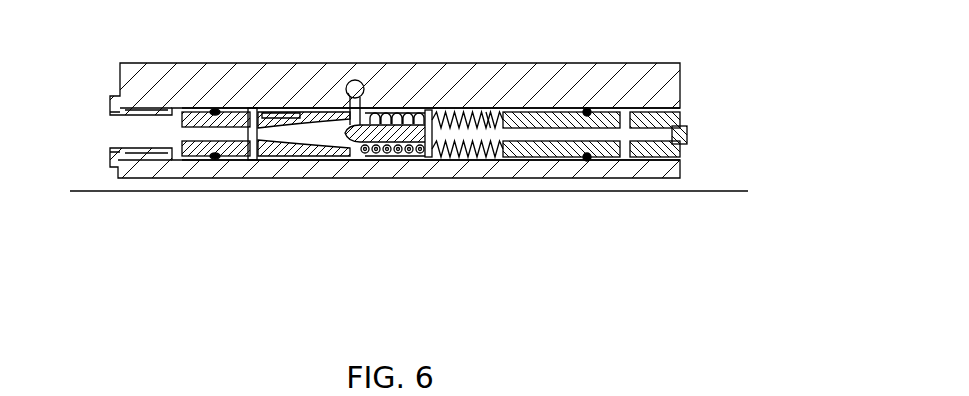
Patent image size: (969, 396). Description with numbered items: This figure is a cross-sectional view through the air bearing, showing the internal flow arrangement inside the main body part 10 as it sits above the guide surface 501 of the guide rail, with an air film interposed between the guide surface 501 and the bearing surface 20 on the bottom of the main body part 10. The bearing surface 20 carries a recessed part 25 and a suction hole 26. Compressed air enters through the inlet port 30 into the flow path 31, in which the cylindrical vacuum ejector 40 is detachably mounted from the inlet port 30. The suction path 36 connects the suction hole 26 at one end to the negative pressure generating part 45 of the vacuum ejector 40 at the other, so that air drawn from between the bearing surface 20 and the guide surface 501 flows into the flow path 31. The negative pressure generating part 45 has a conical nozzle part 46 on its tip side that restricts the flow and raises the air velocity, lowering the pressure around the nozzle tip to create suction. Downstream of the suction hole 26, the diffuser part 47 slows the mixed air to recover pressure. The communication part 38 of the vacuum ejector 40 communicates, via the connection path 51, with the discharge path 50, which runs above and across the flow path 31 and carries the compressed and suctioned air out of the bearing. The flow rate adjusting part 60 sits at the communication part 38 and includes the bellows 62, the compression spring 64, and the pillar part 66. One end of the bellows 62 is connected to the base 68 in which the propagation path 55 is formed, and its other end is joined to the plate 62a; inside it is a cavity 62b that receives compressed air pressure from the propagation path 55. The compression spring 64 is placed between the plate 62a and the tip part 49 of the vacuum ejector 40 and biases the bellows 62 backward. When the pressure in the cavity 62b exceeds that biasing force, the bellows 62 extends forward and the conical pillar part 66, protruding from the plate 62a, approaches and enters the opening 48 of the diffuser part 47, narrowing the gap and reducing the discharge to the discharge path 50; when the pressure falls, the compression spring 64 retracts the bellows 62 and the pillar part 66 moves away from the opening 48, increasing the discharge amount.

The main body part 10 is at (545, 63).
The bearing surface 20 is at (196, 168).
The recessed part 25 is at (430, 175).
The suction hole 26 is at (250, 165).
The inlet port 30 is at (111, 129).
The flow path 31 is at (150, 127).
The suction path 36 is at (260, 170).
The communication part 38 is at (337, 120).
The vacuum ejector 40 is at (213, 116).
The negative pressure generating part 45 is at (262, 112).
The nozzle part 46 is at (240, 116).
The diffuser part 47 is at (318, 150).
The opening 48 is at (343, 168).
The tip part 49 is at (358, 168).
The discharge path 50 is at (357, 80).
The connection path 51 is at (364, 86).
The propagation path 55 is at (583, 118).
The flow rate adjusting part 60 is at (400, 110).
The bellows 62 is at (470, 112).
The plate 62a is at (420, 112).
The cavity 62b is at (487, 112).
The compression spring 64 is at (400, 165).
The pillar part 66 is at (378, 165).
The base 68 is at (523, 112).
The guide surface 501 is at (720, 192).